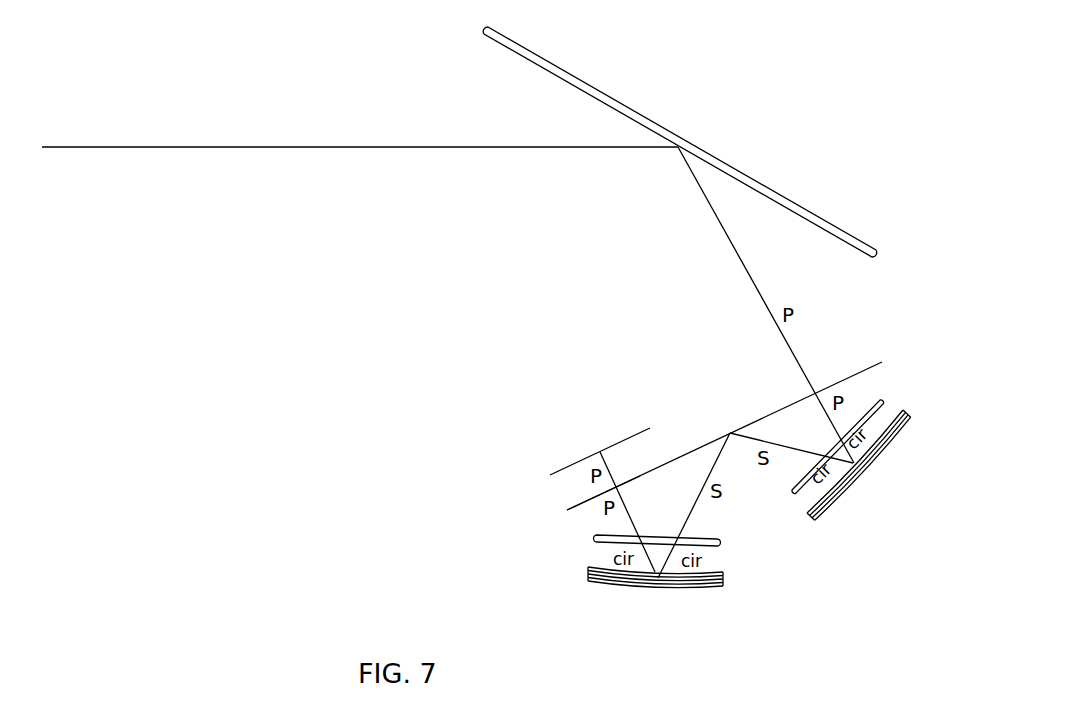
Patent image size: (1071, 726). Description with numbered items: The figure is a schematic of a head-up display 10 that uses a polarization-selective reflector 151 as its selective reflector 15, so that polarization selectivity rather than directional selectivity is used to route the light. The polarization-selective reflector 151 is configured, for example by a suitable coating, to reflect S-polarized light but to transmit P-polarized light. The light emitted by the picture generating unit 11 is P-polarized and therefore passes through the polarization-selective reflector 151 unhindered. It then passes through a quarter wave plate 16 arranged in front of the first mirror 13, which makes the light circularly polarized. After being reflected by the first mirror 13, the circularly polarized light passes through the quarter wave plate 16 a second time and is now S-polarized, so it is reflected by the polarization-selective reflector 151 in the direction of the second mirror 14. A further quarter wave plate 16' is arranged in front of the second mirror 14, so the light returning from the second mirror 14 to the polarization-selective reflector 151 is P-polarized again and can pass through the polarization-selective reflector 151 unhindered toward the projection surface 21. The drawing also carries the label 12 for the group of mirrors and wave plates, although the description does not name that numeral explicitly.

The head-up display 10 is at (330, 358).
The picture generating unit 11 is at (565, 468).
The optical module 12 is at (783, 578).
The first mirror 13 is at (642, 582).
The second mirror 14 is at (840, 493).
The selective reflector 15 is at (702, 415).
The polarization-selective reflector 151 is at (576, 506).
The quarter wave plate 16 is at (608, 527).
The further quarter wave plate 16' is at (879, 423).
The projection surface 21 is at (690, 140).